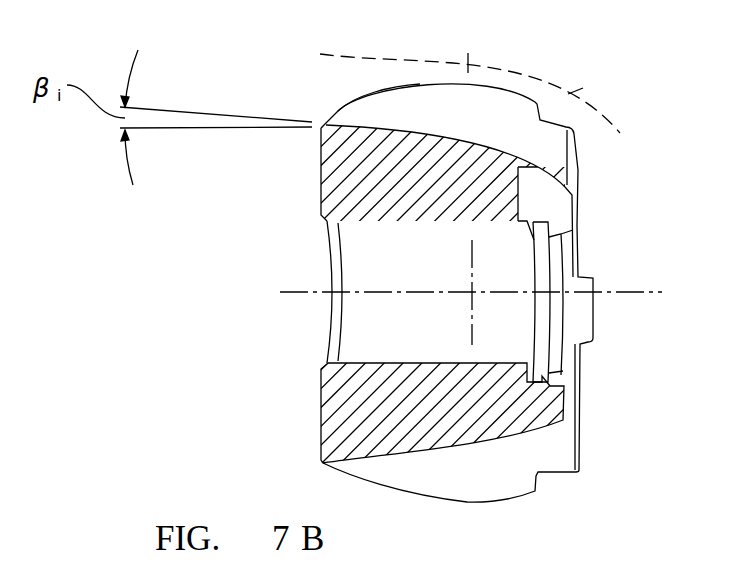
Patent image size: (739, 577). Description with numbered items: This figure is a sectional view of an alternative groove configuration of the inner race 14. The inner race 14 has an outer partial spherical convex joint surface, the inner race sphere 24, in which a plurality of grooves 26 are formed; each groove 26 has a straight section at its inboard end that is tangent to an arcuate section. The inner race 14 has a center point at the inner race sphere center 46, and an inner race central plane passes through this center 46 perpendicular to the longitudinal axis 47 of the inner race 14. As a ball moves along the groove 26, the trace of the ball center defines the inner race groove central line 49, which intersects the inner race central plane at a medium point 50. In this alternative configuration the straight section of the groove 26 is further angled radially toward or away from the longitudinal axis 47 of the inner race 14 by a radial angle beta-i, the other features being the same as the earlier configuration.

The inner race 14 is at (575, 447).
The inner race sphere 24 is at (415, 82).
The groove 26 is at (347, 110).
The inner race sphere center 46 is at (472, 293).
The longitudinal axis 47 is at (572, 288).
The inner race groove central line 49 is at (571, 91).
The medium point 50 is at (470, 62).